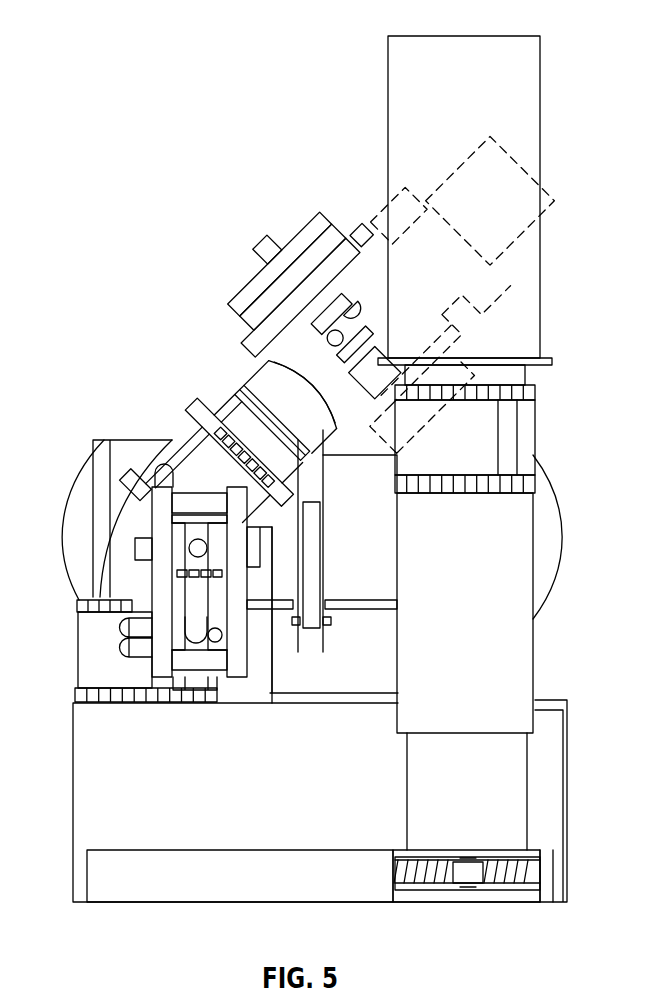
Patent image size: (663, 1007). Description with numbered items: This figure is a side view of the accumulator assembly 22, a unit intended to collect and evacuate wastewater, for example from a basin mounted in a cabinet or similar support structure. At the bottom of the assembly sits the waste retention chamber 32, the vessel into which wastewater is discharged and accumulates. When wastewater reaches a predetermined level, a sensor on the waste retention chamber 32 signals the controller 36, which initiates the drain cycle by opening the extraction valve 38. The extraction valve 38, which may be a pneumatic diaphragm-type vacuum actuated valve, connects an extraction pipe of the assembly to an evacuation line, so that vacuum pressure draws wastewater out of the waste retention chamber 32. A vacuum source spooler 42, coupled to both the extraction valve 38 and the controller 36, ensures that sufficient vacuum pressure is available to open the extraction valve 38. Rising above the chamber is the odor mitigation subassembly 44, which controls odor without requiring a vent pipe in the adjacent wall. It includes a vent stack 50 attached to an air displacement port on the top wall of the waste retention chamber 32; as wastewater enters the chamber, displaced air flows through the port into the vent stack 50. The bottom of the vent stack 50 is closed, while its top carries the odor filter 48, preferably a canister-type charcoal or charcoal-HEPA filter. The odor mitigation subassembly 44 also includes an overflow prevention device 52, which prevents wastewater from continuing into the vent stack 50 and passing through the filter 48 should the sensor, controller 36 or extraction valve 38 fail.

The accumulator assembly 22 is at (104, 202).
The waste retention chamber 32 is at (85, 795).
The controller 36 is at (173, 577).
The extraction valve 38 is at (363, 267).
The vacuum source spooler 42 is at (85, 488).
The odor mitigation subassembly 44 is at (548, 295).
The odor filter 48 is at (525, 88).
The vent stack 50 is at (520, 678).
The overflow prevention device 52 is at (557, 435).